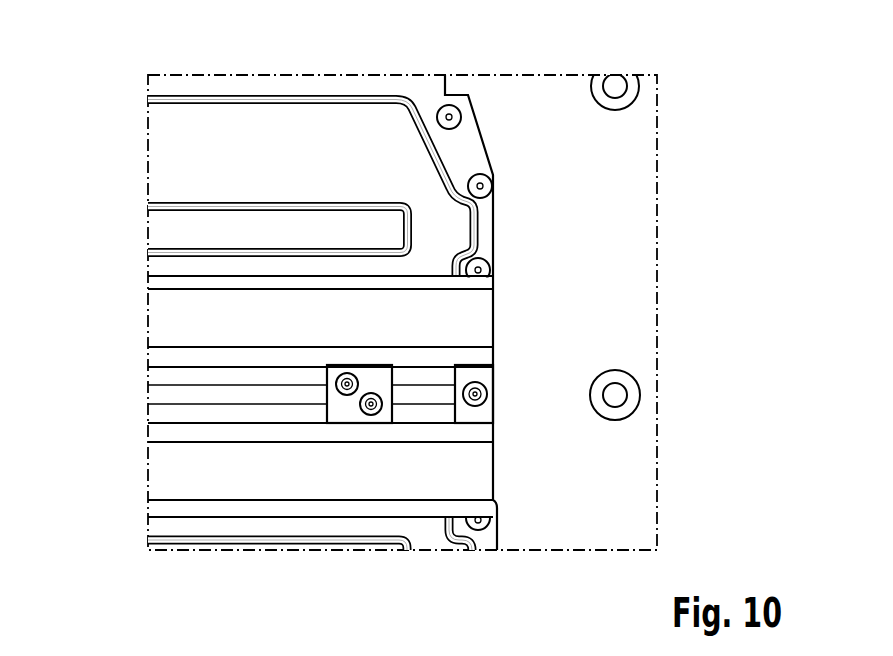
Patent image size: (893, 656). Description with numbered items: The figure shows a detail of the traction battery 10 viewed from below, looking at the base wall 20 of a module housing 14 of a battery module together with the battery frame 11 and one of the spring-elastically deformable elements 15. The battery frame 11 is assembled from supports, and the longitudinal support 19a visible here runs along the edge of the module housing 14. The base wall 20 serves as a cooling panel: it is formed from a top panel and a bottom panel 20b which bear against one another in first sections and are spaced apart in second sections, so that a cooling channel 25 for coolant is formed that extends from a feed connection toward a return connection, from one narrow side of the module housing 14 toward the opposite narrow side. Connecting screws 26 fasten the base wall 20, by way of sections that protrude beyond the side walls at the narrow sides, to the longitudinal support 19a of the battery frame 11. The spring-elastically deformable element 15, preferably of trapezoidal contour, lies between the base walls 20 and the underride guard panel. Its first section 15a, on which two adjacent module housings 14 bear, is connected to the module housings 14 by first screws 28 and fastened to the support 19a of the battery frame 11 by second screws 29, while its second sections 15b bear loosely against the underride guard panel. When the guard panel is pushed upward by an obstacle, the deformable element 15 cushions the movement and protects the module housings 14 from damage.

The traction battery 10 is at (698, 112).
The battery frame 11 is at (674, 196).
The module housing 14 is at (502, 139).
The spring-elastically deformable element 15 is at (278, 398).
The first section 15a is at (160, 396).
The second section 15b is at (162, 282).
The longitudinal support 19a is at (640, 462).
The base wall 20 is at (311, 311).
The bottom panel 20b is at (271, 95).
The cooling channel 25 is at (150, 159).
The connecting screw 26 is at (452, 116).
The first screw 28 is at (347, 382).
The second screw 29 is at (488, 394).